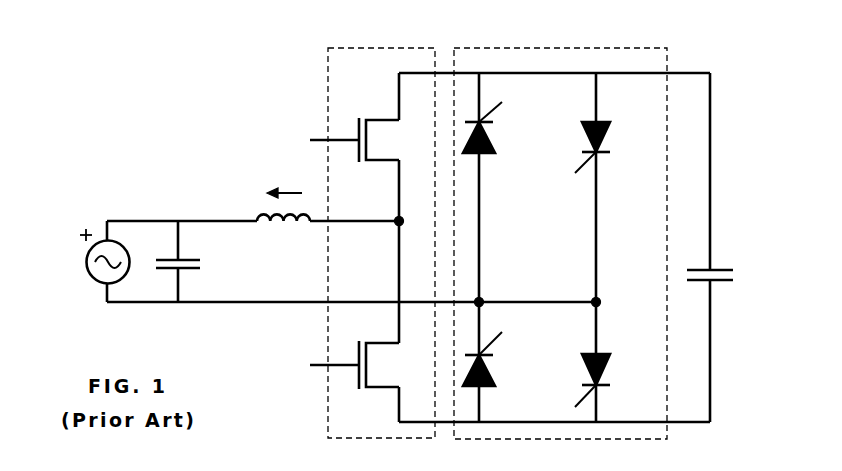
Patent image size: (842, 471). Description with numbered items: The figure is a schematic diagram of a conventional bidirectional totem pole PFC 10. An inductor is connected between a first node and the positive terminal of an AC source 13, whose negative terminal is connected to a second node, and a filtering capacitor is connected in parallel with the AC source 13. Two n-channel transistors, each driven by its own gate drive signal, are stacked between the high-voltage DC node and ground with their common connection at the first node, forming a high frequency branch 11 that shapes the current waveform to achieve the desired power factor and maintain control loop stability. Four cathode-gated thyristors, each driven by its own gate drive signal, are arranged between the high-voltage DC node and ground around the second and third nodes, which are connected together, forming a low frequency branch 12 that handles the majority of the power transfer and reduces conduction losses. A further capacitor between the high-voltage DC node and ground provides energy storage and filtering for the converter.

The bidirectional totem pole PFC 10 is at (789, 112).
The high frequency branch 11 is at (378, 47).
The low frequency branch 12 is at (498, 47).
The AC source 13 is at (94, 280).